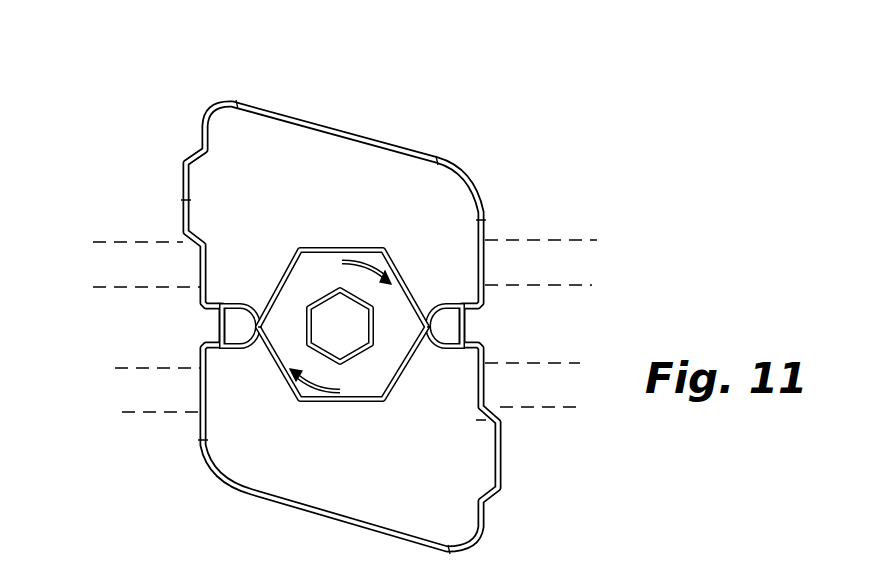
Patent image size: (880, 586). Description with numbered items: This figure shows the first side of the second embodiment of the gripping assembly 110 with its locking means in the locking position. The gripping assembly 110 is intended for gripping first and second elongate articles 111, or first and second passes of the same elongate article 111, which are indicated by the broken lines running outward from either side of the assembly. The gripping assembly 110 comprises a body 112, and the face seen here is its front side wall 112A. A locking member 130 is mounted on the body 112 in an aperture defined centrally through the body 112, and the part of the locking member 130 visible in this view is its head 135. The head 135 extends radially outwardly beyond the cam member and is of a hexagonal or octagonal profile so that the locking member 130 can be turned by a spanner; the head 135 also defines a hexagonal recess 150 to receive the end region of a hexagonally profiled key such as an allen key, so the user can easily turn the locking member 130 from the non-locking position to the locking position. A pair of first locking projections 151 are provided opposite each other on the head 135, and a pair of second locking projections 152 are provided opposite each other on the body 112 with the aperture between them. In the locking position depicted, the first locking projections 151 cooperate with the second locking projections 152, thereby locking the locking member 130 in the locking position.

The gripping assembly 110 is at (278, 103).
The body 112 is at (398, 140).
The front side wall 112A is at (458, 503).
The elongate articles 111 is at (95, 240).
The locking member 130 is at (406, 368).
The head 135 is at (362, 385).
The hexagonal recess 150 is at (330, 342).
The first locking projections 151 is at (262, 305).
The second locking projections 152 is at (232, 327).